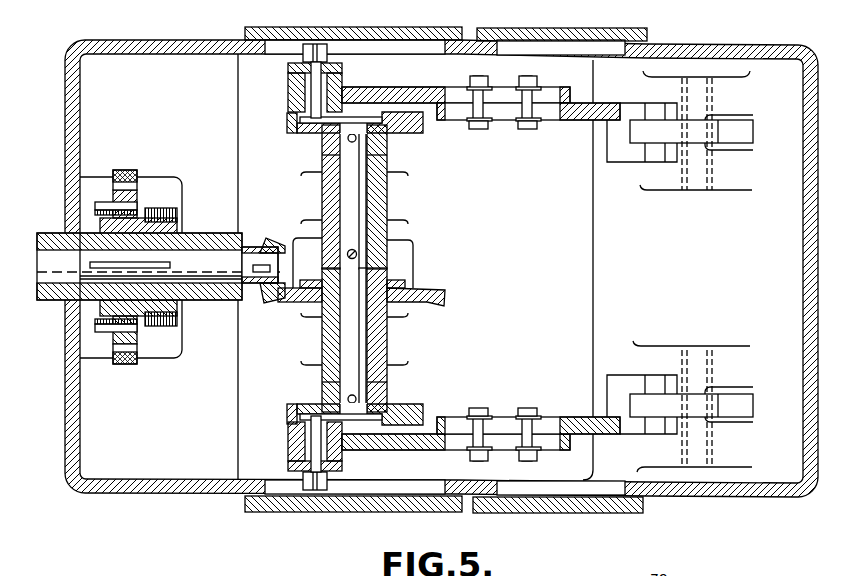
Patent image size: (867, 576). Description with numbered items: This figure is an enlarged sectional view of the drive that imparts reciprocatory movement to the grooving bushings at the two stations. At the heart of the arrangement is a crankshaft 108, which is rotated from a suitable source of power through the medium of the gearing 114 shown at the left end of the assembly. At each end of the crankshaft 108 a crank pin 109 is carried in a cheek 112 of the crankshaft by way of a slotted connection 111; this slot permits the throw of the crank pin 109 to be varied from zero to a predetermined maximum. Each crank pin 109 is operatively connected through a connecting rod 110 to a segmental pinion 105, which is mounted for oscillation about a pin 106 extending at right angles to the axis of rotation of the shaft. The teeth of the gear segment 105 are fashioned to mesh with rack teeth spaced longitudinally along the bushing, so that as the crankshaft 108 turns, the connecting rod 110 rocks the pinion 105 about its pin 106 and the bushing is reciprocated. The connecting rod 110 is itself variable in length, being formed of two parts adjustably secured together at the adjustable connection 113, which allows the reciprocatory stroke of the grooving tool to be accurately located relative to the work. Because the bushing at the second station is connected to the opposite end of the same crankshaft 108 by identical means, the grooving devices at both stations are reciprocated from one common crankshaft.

The segmental pinion 105 is at (735, 133).
The pin 106 is at (695, 175).
The crankshaft 108 is at (405, 400).
The crank pin 109 is at (315, 78).
The connecting rod 110 is at (577, 120).
The slotted connection 111 is at (371, 122).
The cheek 112 is at (418, 124).
The adjustable connection 113 is at (528, 132).
The gearing 114 is at (184, 308).